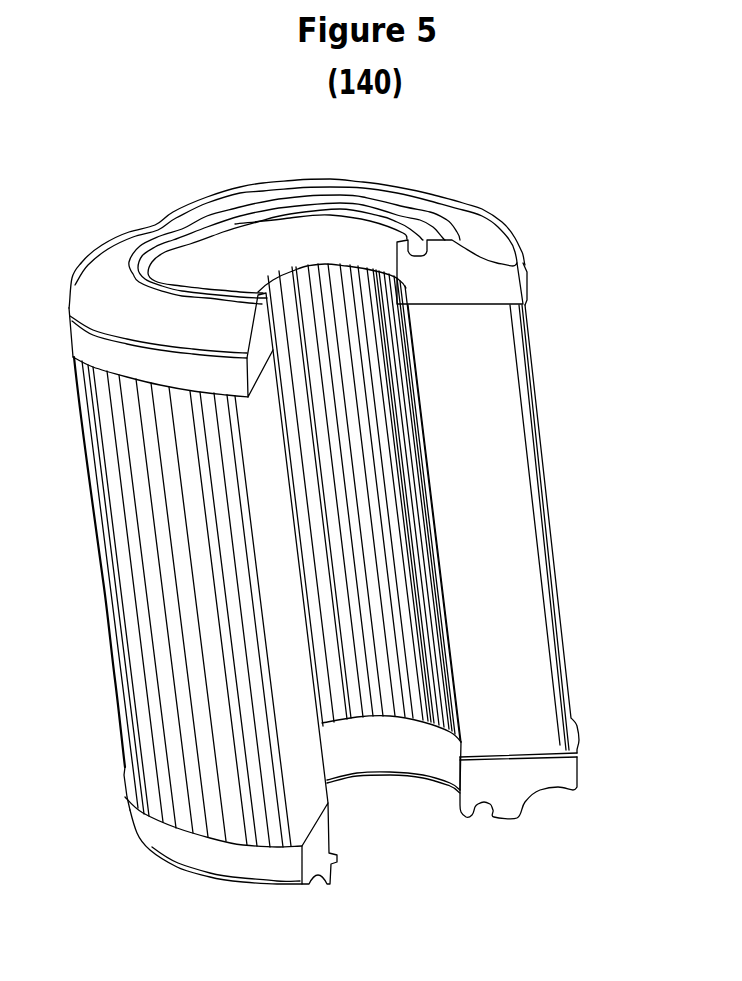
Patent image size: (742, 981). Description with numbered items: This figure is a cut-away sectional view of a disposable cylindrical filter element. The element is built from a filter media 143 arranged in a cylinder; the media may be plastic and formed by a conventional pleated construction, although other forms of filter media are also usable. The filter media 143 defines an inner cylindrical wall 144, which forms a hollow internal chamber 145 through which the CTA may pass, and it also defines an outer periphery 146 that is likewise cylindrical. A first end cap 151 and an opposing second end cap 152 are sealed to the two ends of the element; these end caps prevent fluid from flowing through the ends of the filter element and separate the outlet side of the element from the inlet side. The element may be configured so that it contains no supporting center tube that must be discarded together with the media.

The filter media 143 is at (483, 548).
The inner cylindrical wall 144 is at (425, 405).
The hollow internal chamber 145 is at (368, 755).
The outer periphery 146 is at (547, 487).
The first end cap 151 is at (462, 278).
The second end cap 152 is at (517, 780).